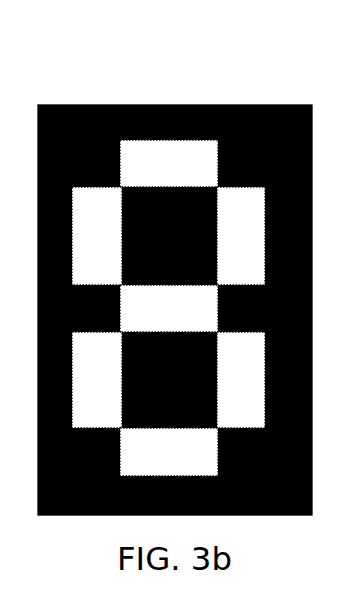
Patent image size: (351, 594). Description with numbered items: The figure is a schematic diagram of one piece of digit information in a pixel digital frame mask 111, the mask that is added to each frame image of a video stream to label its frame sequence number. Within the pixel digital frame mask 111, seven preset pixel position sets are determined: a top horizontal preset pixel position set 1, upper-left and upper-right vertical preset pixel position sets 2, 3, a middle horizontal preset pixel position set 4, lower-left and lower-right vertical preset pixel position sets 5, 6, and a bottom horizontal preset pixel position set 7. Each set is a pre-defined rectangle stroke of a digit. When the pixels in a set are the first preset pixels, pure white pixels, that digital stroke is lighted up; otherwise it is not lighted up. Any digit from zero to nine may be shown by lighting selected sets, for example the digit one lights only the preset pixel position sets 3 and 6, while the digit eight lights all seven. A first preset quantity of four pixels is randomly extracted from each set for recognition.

The pixel digital frame mask 111 is at (187, 105).
The preset pixel position set 1 is at (169, 163).
The preset pixel position set 2 is at (97, 236).
The preset pixel position set 3 is at (241, 236).
The preset pixel position set 4 is at (169, 308).
The preset pixel position set 5 is at (97, 380).
The preset pixel position set 6 is at (241, 380).
The preset pixel position set 7 is at (169, 452).